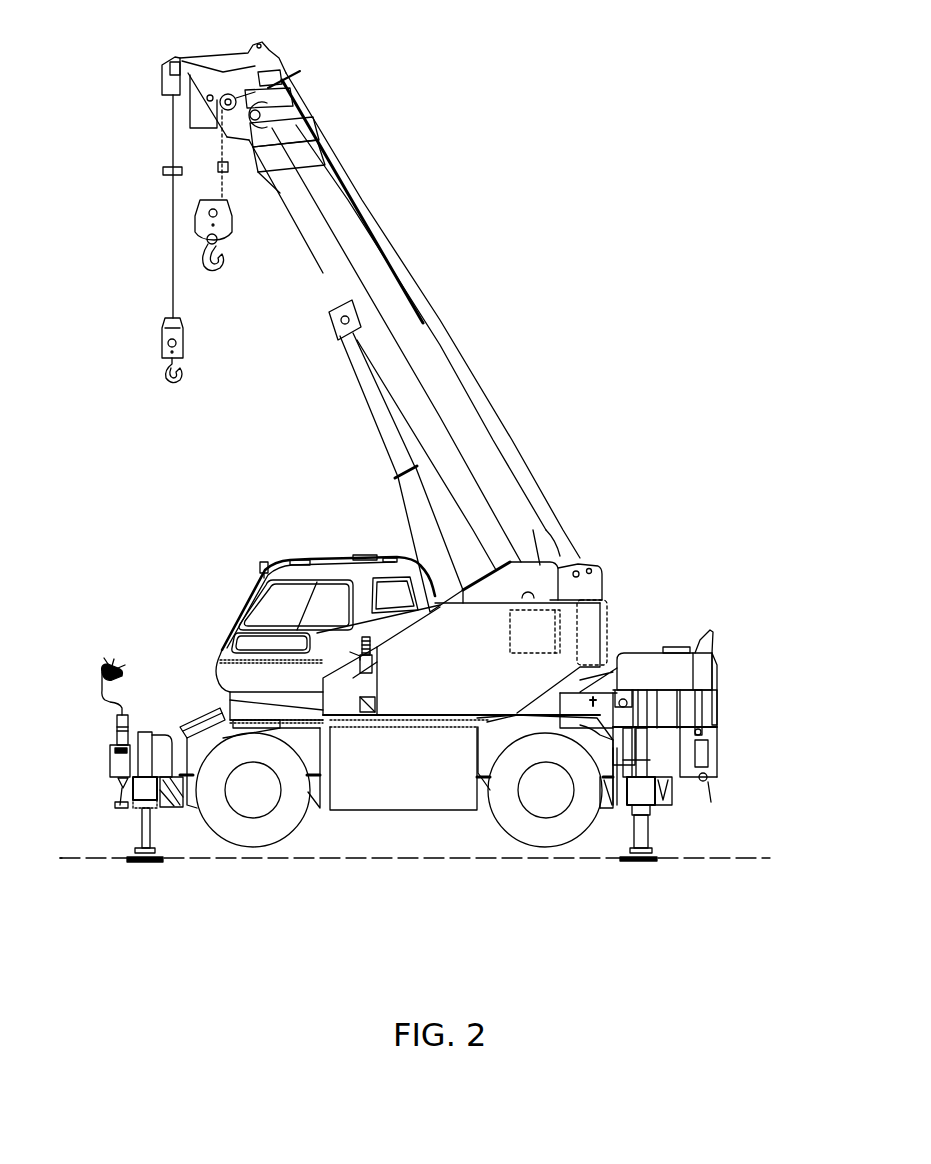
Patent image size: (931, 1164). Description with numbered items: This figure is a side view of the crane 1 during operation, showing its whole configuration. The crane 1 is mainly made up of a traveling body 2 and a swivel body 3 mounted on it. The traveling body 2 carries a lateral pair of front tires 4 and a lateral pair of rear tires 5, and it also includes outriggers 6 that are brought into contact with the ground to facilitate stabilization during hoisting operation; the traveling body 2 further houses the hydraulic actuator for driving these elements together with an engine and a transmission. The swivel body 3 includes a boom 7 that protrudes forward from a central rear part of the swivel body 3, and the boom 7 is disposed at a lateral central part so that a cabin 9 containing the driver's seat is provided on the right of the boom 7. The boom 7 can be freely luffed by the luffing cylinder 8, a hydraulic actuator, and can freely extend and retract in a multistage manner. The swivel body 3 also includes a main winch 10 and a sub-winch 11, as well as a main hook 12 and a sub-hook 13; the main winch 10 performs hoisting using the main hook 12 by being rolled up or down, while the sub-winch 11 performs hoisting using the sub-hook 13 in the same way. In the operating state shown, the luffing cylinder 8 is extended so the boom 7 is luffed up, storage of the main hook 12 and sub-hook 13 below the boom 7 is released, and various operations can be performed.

The crane 1 is at (725, 492).
The traveling body 2 is at (775, 723).
The swivel body 3 is at (690, 594).
The front tires 4 is at (237, 834).
The rear tires 5 is at (562, 835).
The outriggers 6 is at (143, 817).
The boom 7 is at (436, 198).
The luffing cylinder 8 is at (415, 506).
The cabin 9 is at (313, 513).
The main winch 10 is at (600, 626).
The sub-winch 11 is at (552, 580).
The main hook 12 is at (218, 268).
The sub-hook 13 is at (160, 376).